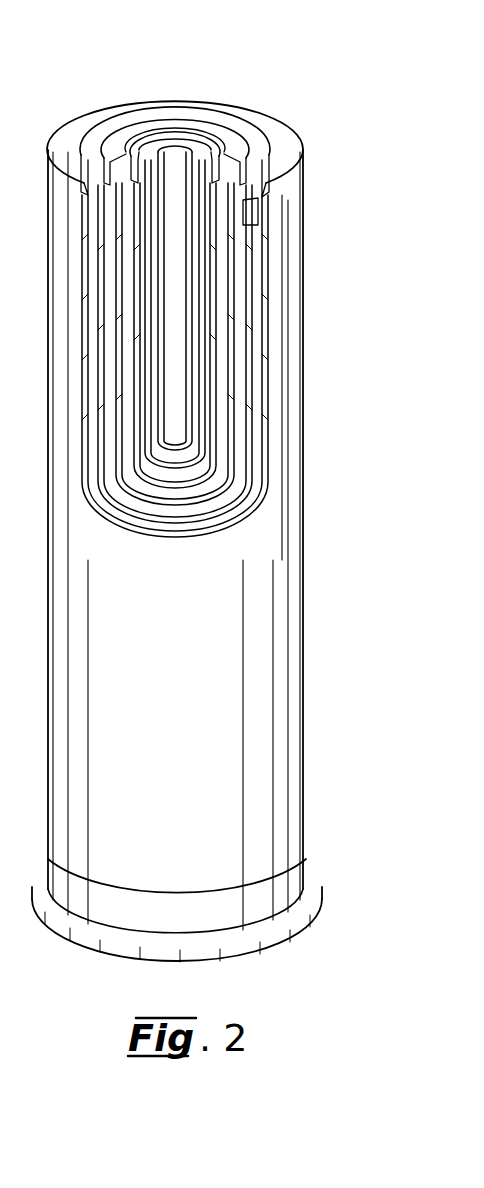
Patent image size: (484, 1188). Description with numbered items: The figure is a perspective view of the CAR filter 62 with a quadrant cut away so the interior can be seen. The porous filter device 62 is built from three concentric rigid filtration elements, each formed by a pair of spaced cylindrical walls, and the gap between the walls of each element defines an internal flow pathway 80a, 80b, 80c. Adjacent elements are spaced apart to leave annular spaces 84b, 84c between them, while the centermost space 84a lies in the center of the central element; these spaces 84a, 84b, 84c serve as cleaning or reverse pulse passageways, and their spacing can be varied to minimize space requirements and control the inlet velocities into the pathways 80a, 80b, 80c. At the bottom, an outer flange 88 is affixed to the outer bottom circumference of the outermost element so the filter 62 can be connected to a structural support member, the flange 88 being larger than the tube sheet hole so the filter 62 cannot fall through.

The CAR filter 62 is at (320, 50).
The centermost space 84a is at (163, 145).
The annular space 84b is at (184, 137).
The annular space 84c is at (229, 127).
The internal flow pathway 80a is at (195, 340).
The internal flow pathway 80b is at (215, 385).
The inner flow pathway 80c is at (252, 435).
The outer flange 88 is at (322, 882).